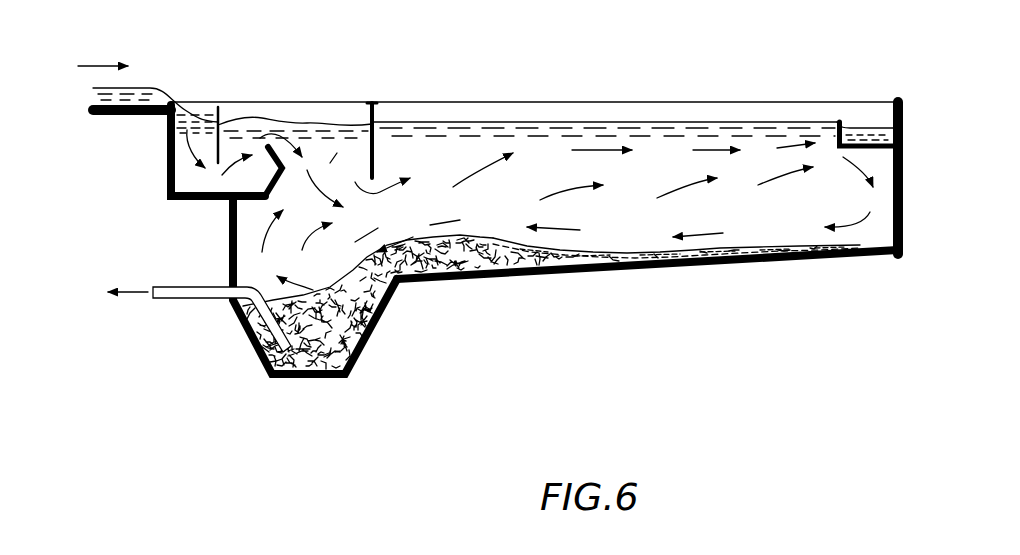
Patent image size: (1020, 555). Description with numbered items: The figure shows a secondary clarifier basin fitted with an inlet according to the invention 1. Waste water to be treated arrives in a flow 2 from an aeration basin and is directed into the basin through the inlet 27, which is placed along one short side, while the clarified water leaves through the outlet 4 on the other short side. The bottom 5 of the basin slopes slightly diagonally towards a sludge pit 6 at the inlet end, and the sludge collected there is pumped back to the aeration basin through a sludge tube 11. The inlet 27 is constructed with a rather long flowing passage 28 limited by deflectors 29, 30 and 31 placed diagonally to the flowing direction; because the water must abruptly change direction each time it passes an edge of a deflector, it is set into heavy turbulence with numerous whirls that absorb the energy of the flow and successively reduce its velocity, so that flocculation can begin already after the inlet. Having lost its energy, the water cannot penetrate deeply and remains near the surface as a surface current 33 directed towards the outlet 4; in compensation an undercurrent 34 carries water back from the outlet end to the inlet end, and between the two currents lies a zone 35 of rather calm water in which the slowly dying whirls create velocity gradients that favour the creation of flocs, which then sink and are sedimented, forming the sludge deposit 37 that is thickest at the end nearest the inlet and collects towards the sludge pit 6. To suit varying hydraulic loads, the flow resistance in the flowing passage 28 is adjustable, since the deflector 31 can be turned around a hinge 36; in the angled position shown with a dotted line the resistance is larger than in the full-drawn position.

The inlet according to the invention 1 is at (608, 72).
The flow 2 is at (142, 83).
The outlet 4 is at (860, 128).
The bottom 5 is at (846, 250).
The sludge pit 6 is at (357, 360).
The sludge tube 11 is at (179, 293).
The inlet 27 is at (203, 127).
The flowing passage 28 is at (313, 157).
The deflector 29 is at (245, 123).
The deflector 30 is at (283, 138).
The deflector 31 is at (374, 147).
The surface current 33 is at (648, 127).
The undercurrent 34 is at (705, 238).
The zone 35 is at (637, 198).
The hinge 36 is at (380, 110).
The sludge deposit 37 is at (500, 278).